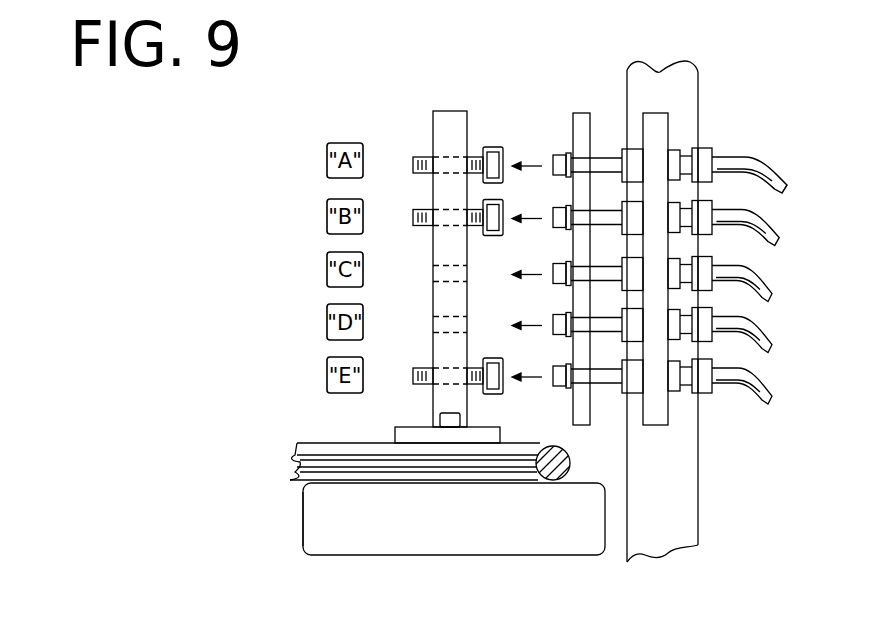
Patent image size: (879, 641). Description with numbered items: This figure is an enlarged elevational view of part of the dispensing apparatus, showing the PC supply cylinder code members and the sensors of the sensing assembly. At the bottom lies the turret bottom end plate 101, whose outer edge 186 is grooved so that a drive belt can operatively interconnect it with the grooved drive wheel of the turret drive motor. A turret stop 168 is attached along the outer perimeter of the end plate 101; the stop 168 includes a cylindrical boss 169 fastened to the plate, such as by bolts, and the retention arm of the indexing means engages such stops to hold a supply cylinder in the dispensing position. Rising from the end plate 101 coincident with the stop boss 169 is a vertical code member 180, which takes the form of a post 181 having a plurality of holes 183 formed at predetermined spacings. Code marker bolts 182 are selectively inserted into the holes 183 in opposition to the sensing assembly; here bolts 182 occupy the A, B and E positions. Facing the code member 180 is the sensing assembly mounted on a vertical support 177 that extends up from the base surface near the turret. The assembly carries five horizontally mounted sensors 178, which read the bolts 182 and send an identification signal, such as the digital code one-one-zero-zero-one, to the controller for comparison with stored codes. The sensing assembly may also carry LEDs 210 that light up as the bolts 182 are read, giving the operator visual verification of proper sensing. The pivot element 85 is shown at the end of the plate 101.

The pivot shaft 85 is at (570, 463).
The turret bottom end plate 101 is at (320, 443).
The turret stop 168 is at (325, 508).
The cylindrical boss 169 is at (318, 537).
The vertical support 177 is at (688, 84).
The sensor 178 is at (757, 283).
The code member 180 is at (454, 111).
The post 181 is at (432, 138).
The bolt 182 is at (502, 147).
The hole 183 is at (432, 323).
The outer edge 186 is at (447, 478).
The LED 210 is at (678, 150).